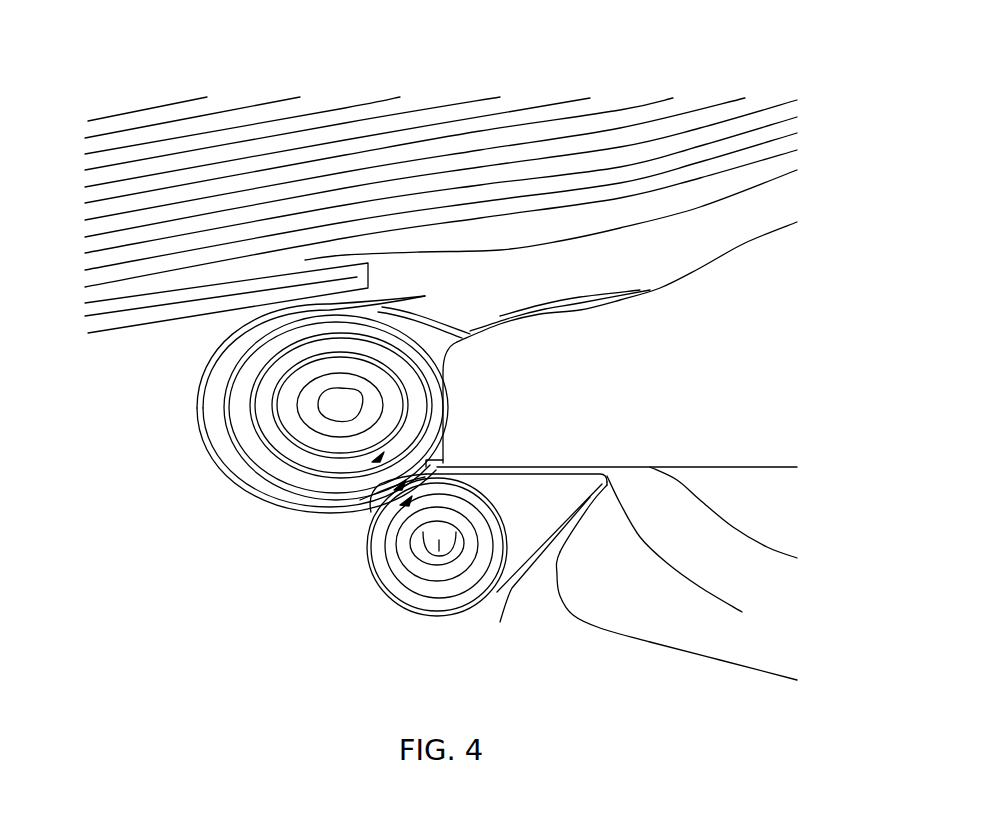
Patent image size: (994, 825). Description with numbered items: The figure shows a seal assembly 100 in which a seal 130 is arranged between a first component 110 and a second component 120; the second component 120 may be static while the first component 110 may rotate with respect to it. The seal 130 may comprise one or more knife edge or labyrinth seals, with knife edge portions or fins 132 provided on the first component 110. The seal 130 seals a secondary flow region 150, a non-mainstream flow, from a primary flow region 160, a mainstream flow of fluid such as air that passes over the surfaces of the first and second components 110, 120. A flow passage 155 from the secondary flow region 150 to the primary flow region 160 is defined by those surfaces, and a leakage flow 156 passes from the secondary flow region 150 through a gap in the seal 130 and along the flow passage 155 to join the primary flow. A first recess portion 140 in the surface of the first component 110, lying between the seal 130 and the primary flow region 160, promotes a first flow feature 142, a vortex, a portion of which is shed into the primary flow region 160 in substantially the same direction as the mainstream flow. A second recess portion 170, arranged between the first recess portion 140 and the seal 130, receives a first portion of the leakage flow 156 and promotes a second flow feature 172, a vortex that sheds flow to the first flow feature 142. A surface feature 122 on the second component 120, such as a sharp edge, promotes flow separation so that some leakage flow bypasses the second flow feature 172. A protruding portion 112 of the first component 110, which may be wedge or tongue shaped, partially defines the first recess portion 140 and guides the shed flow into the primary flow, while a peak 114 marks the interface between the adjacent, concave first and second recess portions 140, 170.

The seal assembly 100 is at (442, 72).
The first component 110 is at (362, 645).
The protruding portion 112 is at (207, 305).
The peak 114 is at (368, 520).
The second component 120 is at (752, 358).
The surface feature 122 is at (447, 462).
The seal 130 is at (545, 570).
The fins 132 is at (563, 552).
The first recess portion 140 is at (200, 455).
The first flow feature 142 is at (340, 405).
The secondary flow region 150 is at (753, 578).
The flow passage 155 is at (350, 498).
The leakage flow 156 is at (547, 470).
The primary flow region 160 is at (90, 195).
The second recess portion 170 is at (393, 580).
The second flow feature 172 is at (428, 560).